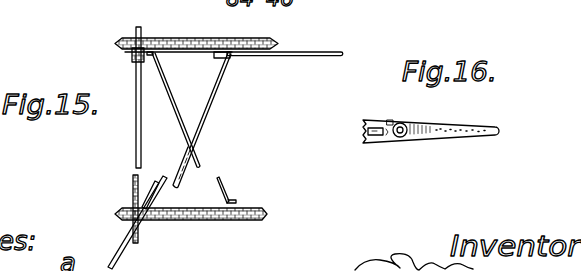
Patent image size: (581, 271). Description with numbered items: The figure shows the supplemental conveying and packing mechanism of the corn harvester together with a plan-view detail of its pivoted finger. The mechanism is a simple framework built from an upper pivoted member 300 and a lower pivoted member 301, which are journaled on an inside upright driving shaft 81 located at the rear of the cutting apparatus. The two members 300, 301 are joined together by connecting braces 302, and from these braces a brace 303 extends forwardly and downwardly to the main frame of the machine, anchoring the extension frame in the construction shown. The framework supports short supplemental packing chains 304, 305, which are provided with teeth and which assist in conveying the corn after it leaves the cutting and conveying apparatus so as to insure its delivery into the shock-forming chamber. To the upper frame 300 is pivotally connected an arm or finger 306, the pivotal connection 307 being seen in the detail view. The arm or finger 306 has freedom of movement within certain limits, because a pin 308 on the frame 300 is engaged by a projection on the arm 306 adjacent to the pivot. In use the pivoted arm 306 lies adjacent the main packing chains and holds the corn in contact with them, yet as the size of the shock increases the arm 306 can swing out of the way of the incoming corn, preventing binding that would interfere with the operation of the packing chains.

In FIG. 15, the inside upright driving shaft 81 is at (136, 91).
In FIG. 15, the upper pivoted member 300 is at (222, 58).
In FIG. 16, the upper pivoted member 300 is at (372, 143).
In FIG. 15, the lower pivoted member 301 is at (250, 207).
In FIG. 15, the connecting braces 302 is at (213, 92).
In FIG. 15, the brace 303 is at (118, 251).
In FIG. 15, the supplemental packing chain 304 is at (186, 38).
In FIG. 15, the supplemental packing chain 305 is at (194, 220).
In FIG. 15, the arm or finger 306 is at (284, 56).
In FIG. 16, the arm or finger 306 is at (458, 137).
In FIG. 16, the pivotal connection 307 is at (402, 138).
In FIG. 16, the pin 308 is at (390, 119).